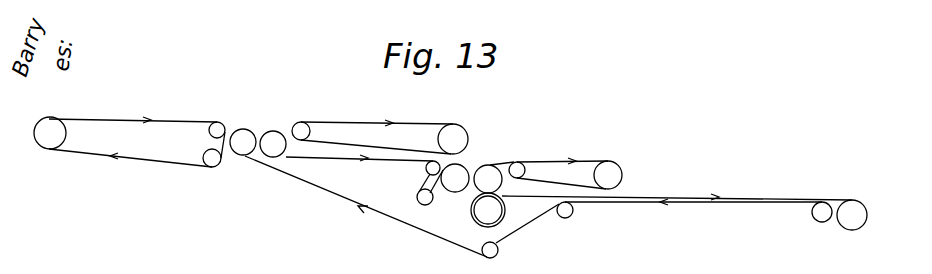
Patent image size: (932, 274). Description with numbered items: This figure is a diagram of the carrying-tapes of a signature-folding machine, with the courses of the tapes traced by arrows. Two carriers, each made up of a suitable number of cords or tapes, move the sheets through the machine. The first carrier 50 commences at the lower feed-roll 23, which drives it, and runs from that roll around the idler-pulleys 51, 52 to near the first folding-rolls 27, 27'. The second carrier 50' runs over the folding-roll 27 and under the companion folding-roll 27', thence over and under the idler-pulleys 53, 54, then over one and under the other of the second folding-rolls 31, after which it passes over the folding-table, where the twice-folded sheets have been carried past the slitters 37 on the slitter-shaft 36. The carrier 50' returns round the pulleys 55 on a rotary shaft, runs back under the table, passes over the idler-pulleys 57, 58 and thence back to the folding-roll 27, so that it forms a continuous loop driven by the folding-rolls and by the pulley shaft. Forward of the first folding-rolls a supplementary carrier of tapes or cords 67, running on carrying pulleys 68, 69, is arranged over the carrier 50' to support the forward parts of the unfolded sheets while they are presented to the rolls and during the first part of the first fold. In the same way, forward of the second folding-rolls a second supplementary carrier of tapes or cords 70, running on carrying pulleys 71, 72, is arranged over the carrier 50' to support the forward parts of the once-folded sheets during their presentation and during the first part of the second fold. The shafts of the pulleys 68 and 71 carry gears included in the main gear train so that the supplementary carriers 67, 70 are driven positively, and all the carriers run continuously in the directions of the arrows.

The lower feed-roll 23 is at (50, 133).
The carrier 50 is at (137, 142).
The idler-pulley 51 is at (209, 130).
The idler-pulley 52 is at (210, 163).
The first folding-roll 27 is at (243, 142).
The first folding-roll 27' is at (273, 144).
The carrying pulley 69 is at (301, 130).
The supplementary carrier tapes or cords 67 is at (377, 137).
The carrying pulley 68 is at (453, 139).
The carrier 50' is at (548, 206).
The idler-pulley 53 is at (425, 169).
The idler-pulley 54 is at (417, 197).
The second folding-roll 31 is at (455, 178).
The slitter-shaft 36 is at (488, 210).
The slitters 37 is at (473, 210).
The idler-pulley 58 is at (571, 217).
The carrying pulley 72 is at (520, 162).
The supplementary carrier tapes or cords 70 is at (562, 173).
The carrying pulley 71 is at (608, 175).
The idler-pulley 57 is at (813, 217).
The pulleys 55 is at (867, 215).